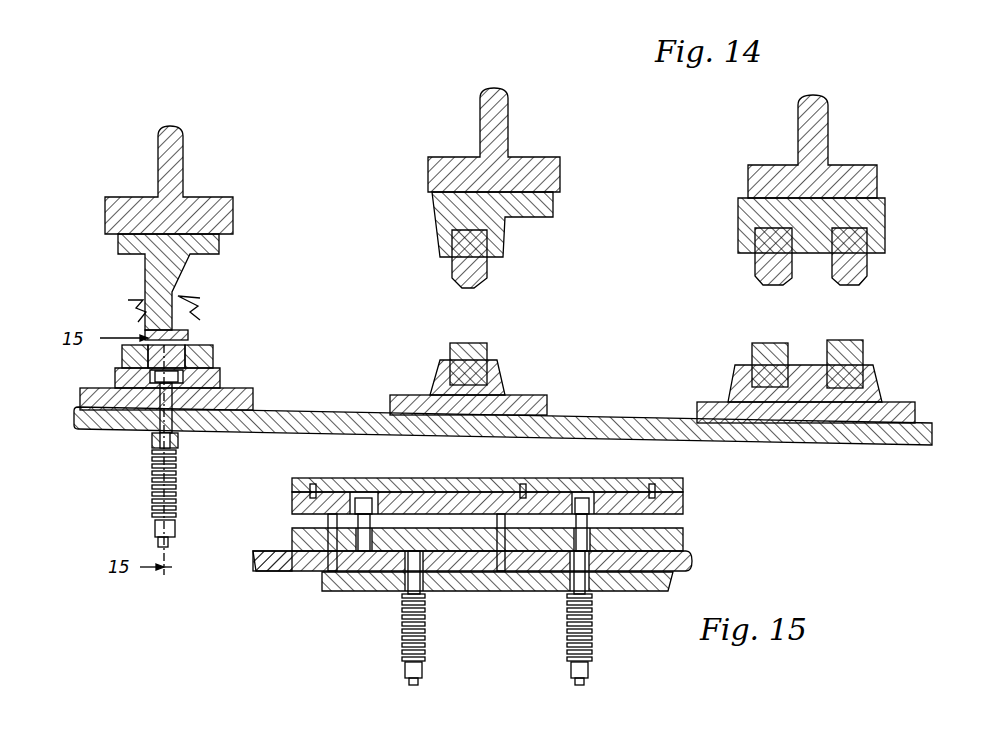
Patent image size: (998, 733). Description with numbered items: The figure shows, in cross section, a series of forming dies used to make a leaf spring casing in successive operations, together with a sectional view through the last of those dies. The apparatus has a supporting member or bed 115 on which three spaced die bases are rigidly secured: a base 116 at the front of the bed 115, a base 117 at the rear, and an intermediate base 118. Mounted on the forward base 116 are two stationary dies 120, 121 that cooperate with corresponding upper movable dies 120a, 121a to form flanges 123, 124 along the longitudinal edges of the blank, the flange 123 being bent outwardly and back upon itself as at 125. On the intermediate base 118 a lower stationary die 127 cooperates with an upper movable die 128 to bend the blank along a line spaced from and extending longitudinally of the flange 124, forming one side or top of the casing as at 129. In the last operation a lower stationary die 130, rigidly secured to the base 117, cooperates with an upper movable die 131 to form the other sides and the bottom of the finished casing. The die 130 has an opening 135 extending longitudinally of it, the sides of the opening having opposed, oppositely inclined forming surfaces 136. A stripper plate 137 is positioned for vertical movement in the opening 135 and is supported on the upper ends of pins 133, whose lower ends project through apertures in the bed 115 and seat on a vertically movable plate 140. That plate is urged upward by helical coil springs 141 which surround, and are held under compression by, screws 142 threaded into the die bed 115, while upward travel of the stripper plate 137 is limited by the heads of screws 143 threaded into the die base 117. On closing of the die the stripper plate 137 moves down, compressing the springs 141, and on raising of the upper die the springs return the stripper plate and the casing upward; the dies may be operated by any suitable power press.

In FIG. 14, the supporting member or bed 115 is at (345, 425).
In FIG. 15, the supporting member or bed 115 is at (365, 560).
In FIG. 14, the die base 116 is at (815, 417).
In FIG. 14, the die base 117 is at (240, 398).
In FIG. 15, the die base 117 is at (283, 558).
In FIG. 14, the intermediate die base 118 is at (482, 398).
In FIG. 14, the stationary die 120 is at (866, 358).
In FIG. 14, the upper movable die 120a is at (868, 273).
In FIG. 14, the stationary die 121 is at (752, 355).
In FIG. 14, the upper movable die 121a is at (766, 280).
In FIG. 14, the flange 123 is at (468, 348).
In FIG. 14, the flange 124 is at (482, 344).
In FIG. 14, the bent-back portion of flange 125 is at (588, 304).
In FIG. 14, the lower stationary die 127 is at (492, 362).
In FIG. 14, the upper movable die 128 is at (488, 274).
In FIG. 14, the casing side wall 129 is at (486, 342).
In FIG. 14, the lower stationary die 130 is at (213, 354).
In FIG. 14, the upper movable die 131 is at (194, 320).
In FIG. 15, the pins 133 is at (318, 565).
In FIG. 14, the opening 135 is at (190, 338).
In FIG. 14, the forming surfaces 136 is at (122, 358).
In FIG. 14, the stripper plate 137 is at (218, 380).
In FIG. 15, the stripper plate 137 is at (292, 501).
In FIG. 15, the vertically movable plate 140 is at (656, 592).
In FIG. 14, the helical coil springs 141 is at (176, 494).
In FIG. 15, the helical coil springs 141 is at (402, 628).
In FIG. 15, the screws 142 is at (424, 592).
In FIG. 15, the screws 143 is at (372, 505).